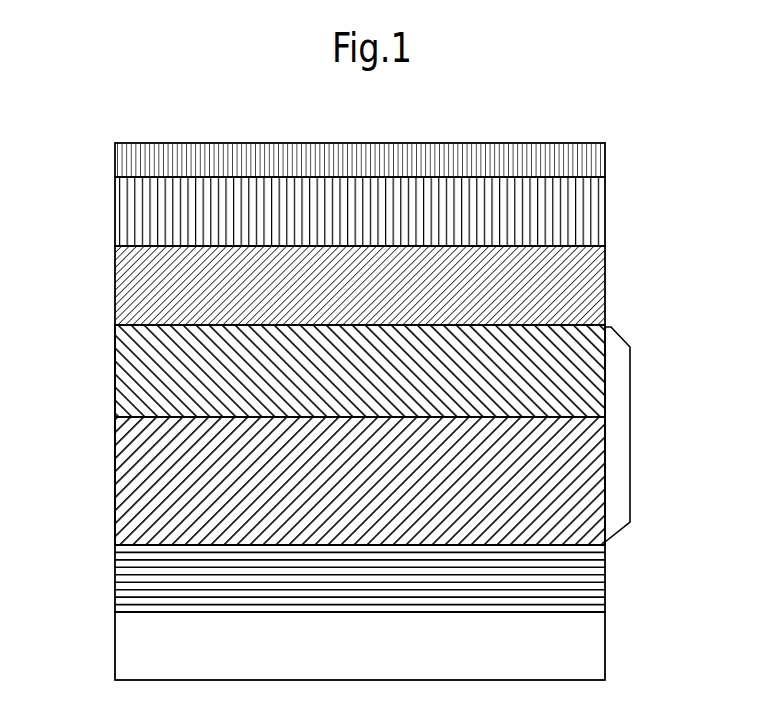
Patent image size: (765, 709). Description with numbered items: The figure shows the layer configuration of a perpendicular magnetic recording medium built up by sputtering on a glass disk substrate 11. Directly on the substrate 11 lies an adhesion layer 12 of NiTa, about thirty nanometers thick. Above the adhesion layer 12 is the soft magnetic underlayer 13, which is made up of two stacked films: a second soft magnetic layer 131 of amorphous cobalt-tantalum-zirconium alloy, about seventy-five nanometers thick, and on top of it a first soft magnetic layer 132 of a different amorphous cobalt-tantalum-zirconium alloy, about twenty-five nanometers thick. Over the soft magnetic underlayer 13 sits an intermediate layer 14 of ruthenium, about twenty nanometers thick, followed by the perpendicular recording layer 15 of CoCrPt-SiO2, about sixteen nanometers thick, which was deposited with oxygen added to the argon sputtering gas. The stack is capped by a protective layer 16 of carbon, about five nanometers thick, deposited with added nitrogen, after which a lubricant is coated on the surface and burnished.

The substrate 11 is at (568, 657).
The adhesion layer 12 is at (568, 590).
The soft magnetic underlayer 13 is at (361, 435).
The second soft magnetic layer 131 is at (133, 485).
The first soft magnetic layer 132 is at (133, 378).
The intermediate layer 14 is at (580, 296).
The perpendicular recording layer 15 is at (568, 223).
The protective layer 16 is at (580, 166).